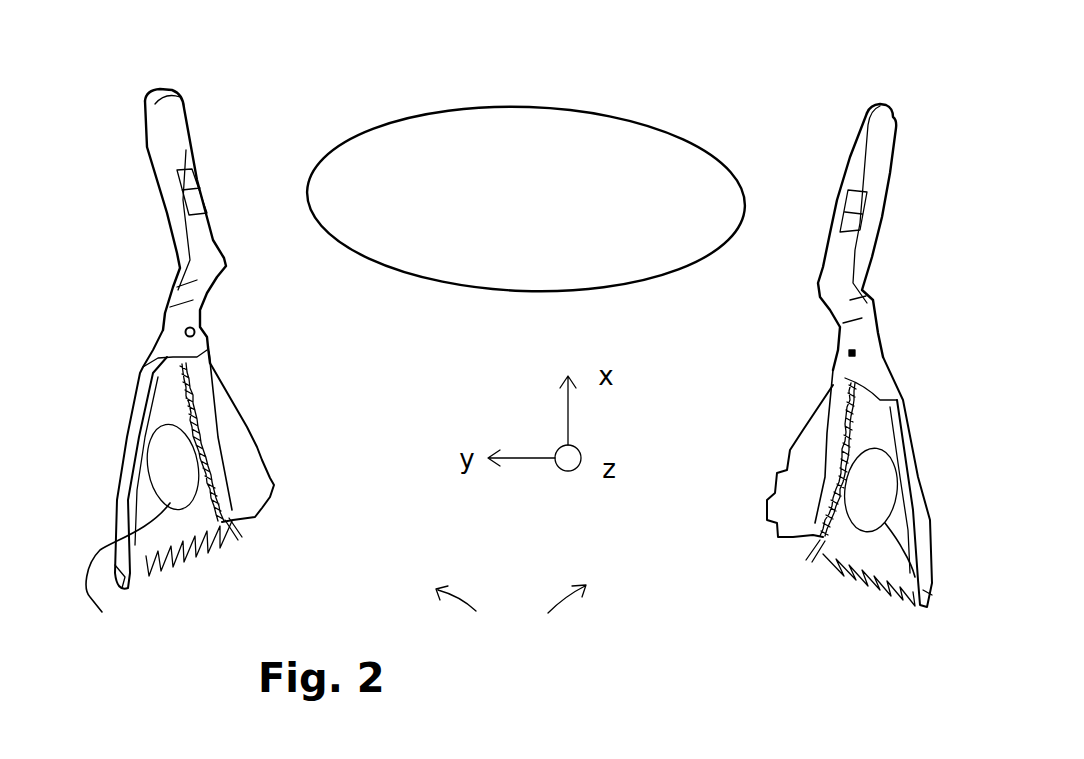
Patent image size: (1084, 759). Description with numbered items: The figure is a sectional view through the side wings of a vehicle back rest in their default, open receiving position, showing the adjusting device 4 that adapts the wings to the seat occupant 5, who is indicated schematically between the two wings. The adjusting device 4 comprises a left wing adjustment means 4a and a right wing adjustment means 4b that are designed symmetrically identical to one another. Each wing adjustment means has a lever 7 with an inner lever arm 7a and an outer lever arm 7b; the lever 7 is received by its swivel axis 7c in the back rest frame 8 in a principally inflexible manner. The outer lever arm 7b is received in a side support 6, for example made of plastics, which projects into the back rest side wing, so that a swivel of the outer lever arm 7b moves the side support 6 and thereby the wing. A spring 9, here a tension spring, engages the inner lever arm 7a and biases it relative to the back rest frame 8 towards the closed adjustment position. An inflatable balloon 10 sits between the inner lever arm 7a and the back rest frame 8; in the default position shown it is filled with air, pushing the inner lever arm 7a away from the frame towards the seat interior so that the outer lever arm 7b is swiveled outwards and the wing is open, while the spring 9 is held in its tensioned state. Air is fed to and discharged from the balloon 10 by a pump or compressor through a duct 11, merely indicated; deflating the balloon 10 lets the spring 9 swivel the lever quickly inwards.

The adjusting device 4 is at (511, 616).
The left wing adjustment means 4a is at (243, 527).
The right wing adjustment means 4b is at (803, 567).
The seat occupant 5 is at (603, 110).
The side support 6 is at (163, 152).
The lever 7 is at (280, 490).
The inner lever arm 7a is at (217, 443).
The outer lever arm 7b is at (188, 142).
The swivel axis 7c is at (210, 325).
The back rest frame 8 is at (143, 367).
The spring 9 is at (177, 577).
The inflatable balloon 10 is at (163, 478).
The duct 11 is at (83, 562).